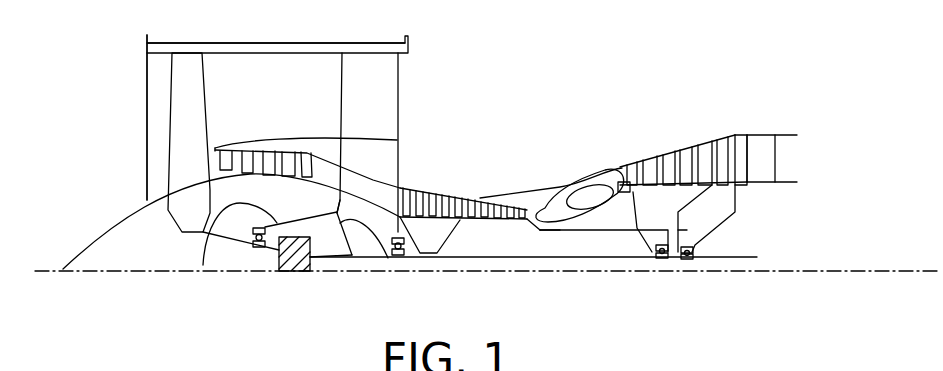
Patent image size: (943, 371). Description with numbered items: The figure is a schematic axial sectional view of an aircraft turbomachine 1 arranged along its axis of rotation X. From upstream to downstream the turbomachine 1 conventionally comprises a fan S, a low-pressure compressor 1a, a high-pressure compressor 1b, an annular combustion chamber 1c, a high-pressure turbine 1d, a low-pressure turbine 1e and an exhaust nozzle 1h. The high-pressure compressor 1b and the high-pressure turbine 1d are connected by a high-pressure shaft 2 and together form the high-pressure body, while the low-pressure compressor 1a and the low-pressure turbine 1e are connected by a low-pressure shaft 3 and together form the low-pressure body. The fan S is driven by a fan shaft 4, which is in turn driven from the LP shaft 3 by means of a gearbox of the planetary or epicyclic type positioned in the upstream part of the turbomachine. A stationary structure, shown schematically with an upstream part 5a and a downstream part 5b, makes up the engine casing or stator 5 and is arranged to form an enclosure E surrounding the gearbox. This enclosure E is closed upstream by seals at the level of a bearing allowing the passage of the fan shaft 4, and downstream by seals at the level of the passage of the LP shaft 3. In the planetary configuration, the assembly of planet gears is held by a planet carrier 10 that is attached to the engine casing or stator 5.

The turbomachine 1 is at (523, 85).
The low-pressure compressor 1a is at (240, 148).
The high-pressure compressor 1b is at (430, 192).
The annular combustion chamber 1c is at (577, 197).
The high-pressure turbine 1d is at (622, 180).
The low-pressure turbine 1e is at (735, 147).
The exhaust nozzle 1h is at (787, 155).
The high-pressure shaft 2 is at (570, 231).
The low-pressure shaft 3 is at (487, 258).
The fan shaft 4 is at (240, 250).
The engine casing or stator 5 is at (328, 210).
The upstream part 5a is at (203, 265).
The downstream part 5b is at (388, 258).
The planet carrier 10 is at (293, 268).
The enclosure E is at (325, 242).
The fan S is at (173, 103).
The axis of rotation X is at (38, 273).